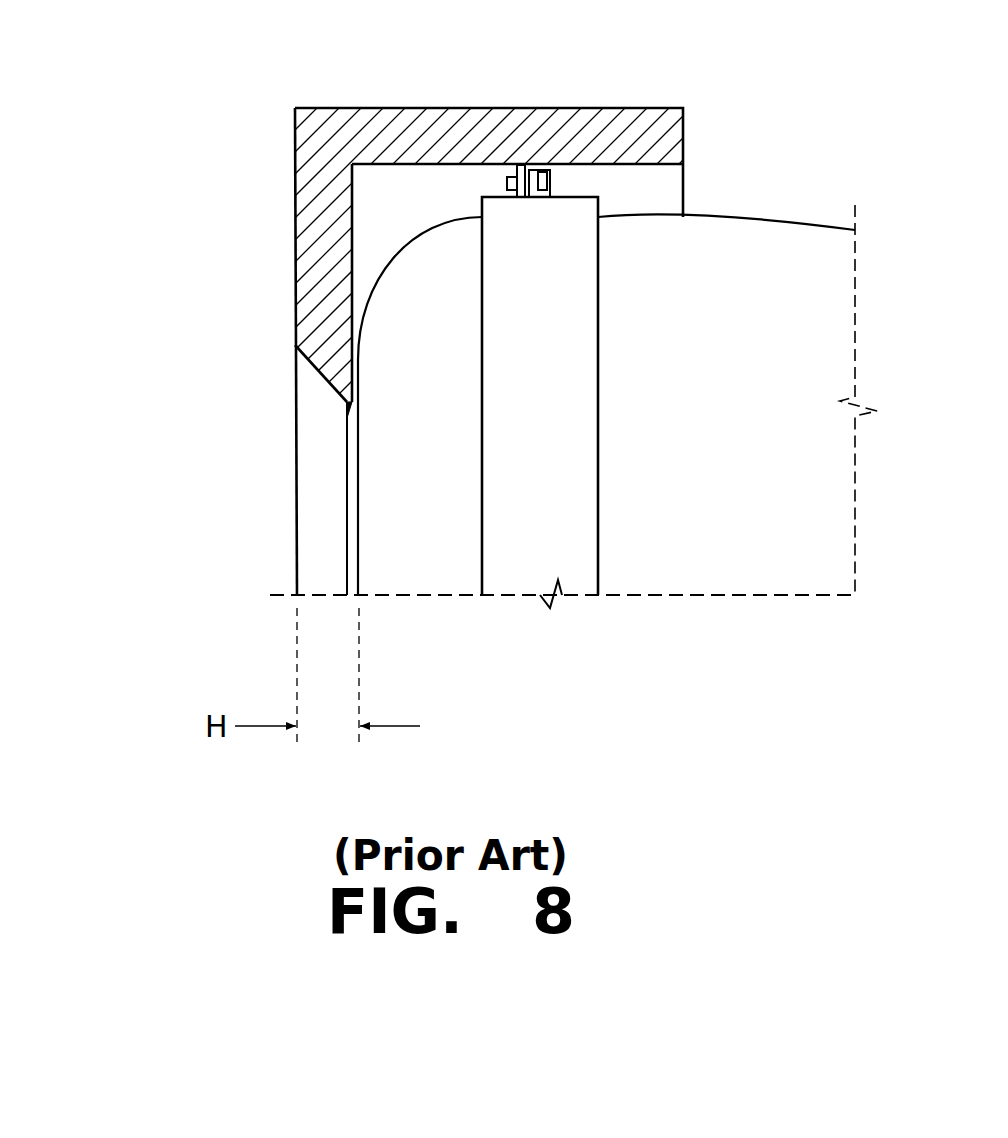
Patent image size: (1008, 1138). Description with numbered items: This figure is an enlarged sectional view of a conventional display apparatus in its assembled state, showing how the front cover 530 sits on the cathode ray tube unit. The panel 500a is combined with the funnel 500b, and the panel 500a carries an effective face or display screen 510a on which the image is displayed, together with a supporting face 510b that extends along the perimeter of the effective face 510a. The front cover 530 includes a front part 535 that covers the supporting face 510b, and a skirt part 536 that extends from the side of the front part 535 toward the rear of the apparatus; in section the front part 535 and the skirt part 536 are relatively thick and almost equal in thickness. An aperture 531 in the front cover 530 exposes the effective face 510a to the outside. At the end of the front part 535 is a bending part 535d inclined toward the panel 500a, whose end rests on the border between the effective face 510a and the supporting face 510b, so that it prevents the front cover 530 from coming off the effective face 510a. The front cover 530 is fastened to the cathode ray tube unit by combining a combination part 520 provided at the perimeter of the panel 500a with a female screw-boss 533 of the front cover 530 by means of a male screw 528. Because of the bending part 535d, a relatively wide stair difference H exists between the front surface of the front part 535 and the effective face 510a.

The front cover 530 is at (492, 342).
The skirt part 536 is at (432, 114).
The front part 535 is at (295, 249).
The bending part 535d is at (297, 375).
The aperture 531 is at (244, 498).
The effective face 510a is at (358, 544).
The supporting face 510b is at (387, 256).
The panel 500a is at (367, 422).
The funnel 500b is at (730, 587).
The female screw-boss 533 is at (509, 176).
The combination part 520 is at (528, 172).
The male screw 528 is at (550, 170).